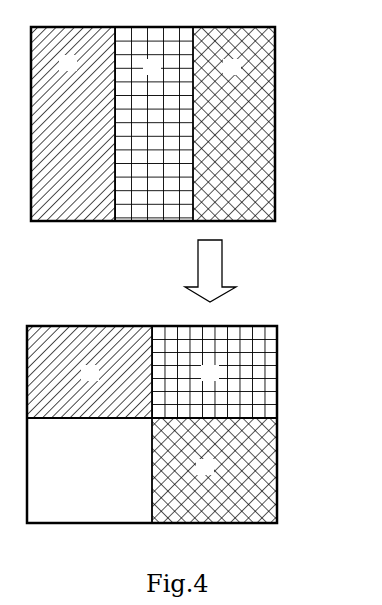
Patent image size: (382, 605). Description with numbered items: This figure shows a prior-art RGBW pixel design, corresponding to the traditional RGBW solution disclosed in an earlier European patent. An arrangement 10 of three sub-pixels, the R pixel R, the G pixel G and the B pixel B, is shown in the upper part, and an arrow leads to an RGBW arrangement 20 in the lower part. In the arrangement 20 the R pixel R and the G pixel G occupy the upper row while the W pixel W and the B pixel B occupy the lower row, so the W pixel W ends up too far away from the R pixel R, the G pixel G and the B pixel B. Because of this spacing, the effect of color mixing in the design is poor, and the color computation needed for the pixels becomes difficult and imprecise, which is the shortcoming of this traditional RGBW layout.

The RGB stripe pixel arrangement 10 is at (146, 236).
The RGBW pixel arrangement 20 is at (303, 403).
The R pixel R is at (73, 124).
The G pixel G is at (154, 124).
The B pixel B is at (234, 124).
The W pixel W is at (89, 470).